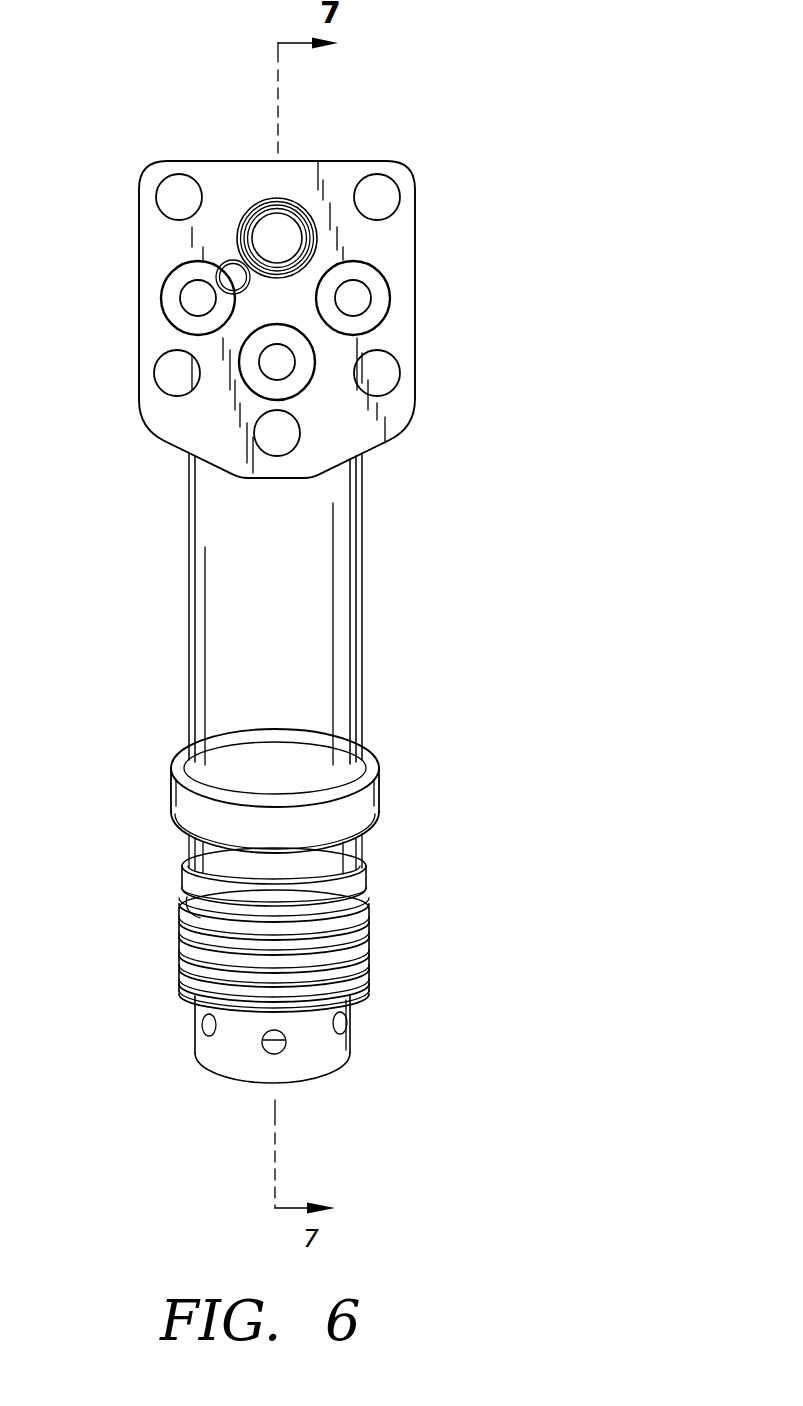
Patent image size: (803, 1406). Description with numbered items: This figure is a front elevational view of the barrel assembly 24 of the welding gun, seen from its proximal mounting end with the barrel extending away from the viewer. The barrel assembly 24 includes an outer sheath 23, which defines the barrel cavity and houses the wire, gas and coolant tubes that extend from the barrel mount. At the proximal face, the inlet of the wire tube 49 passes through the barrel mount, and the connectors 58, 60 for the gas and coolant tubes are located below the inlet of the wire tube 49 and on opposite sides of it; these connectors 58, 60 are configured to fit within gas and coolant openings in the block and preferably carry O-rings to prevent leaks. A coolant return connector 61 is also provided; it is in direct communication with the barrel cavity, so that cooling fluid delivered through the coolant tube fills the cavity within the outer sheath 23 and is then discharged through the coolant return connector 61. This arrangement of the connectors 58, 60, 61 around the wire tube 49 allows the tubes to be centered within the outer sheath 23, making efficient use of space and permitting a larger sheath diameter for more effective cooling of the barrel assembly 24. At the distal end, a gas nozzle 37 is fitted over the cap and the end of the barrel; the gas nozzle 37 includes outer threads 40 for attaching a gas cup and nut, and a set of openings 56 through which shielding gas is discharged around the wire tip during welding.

The outer sheath 23 is at (322, 648).
The barrel assembly 24 is at (522, 550).
The gas nozzle 37 is at (470, 946).
The outer threads 40 is at (368, 912).
The wire tube 49 is at (292, 200).
The openings 56 is at (350, 1030).
The connector 58 is at (378, 294).
The connector 60 is at (173, 302).
The coolant return connector 61 is at (298, 378).